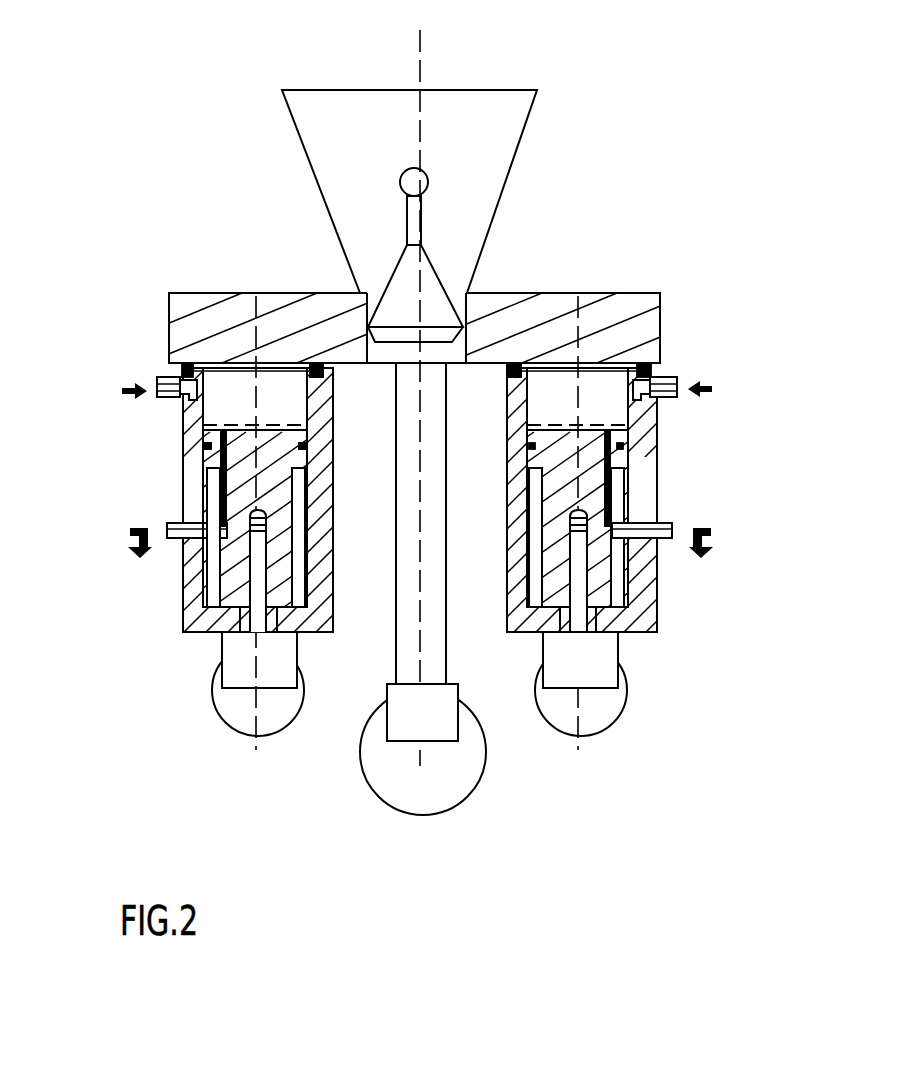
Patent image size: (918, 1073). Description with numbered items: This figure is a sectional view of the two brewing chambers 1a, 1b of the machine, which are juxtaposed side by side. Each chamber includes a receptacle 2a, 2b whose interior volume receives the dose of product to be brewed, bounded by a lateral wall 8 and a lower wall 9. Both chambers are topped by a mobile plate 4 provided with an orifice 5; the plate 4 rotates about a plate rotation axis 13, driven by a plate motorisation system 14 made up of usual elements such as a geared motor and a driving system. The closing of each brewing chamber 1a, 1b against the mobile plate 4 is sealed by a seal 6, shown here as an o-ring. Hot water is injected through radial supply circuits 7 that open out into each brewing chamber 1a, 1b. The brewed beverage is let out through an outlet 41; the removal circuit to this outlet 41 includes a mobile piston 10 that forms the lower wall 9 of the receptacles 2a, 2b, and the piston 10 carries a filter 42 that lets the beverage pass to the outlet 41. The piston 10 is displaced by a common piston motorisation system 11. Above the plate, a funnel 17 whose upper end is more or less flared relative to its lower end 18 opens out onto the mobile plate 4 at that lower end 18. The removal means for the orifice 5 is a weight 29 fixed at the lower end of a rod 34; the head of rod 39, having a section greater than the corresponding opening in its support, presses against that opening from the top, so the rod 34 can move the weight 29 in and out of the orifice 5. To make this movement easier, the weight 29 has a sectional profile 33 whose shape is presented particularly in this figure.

The brewing chamber 1a is at (678, 629).
The brewing chamber 1b is at (170, 633).
The receptacle 2a is at (605, 410).
The receptacle 2b is at (205, 395).
The mobile plate 4 is at (640, 327).
The orifice 5 is at (450, 350).
The seal 6 is at (655, 372).
The radial supply circuit 7 is at (647, 403).
The lateral wall 8 is at (200, 420).
The lower wall 9 is at (277, 433).
The piston 10 is at (183, 488).
The piston motorisation system 11 is at (608, 702).
The plate rotation axis 13 is at (418, 42).
The plate motorisation system 14 is at (442, 785).
The funnel 17 is at (500, 147).
The lower end 18 is at (358, 292).
The weight 29 is at (428, 292).
The sectional profile 33 is at (390, 270).
The rod 34 is at (405, 212).
The head of rod 39 is at (405, 213).
The outlet 41 is at (672, 525).
The filter 42 is at (620, 440).